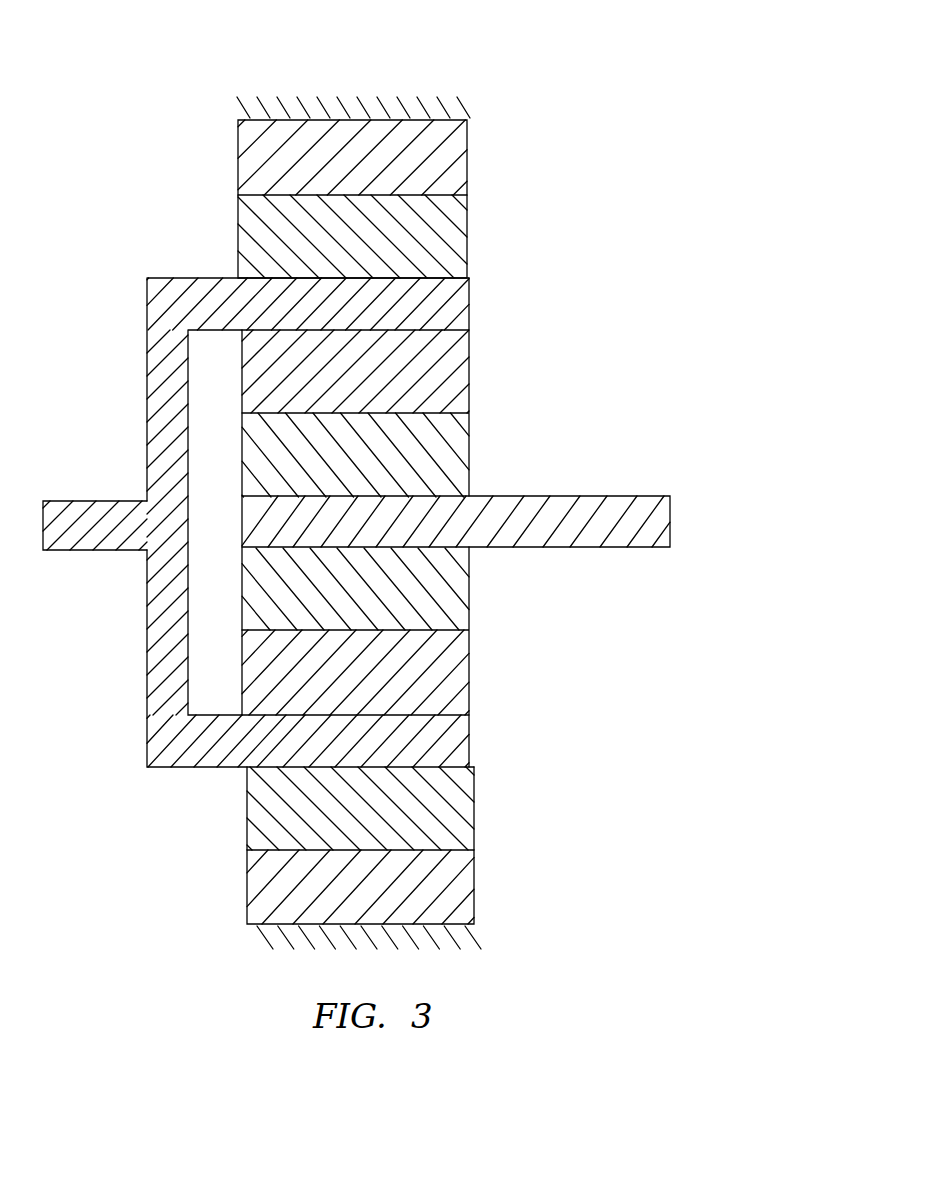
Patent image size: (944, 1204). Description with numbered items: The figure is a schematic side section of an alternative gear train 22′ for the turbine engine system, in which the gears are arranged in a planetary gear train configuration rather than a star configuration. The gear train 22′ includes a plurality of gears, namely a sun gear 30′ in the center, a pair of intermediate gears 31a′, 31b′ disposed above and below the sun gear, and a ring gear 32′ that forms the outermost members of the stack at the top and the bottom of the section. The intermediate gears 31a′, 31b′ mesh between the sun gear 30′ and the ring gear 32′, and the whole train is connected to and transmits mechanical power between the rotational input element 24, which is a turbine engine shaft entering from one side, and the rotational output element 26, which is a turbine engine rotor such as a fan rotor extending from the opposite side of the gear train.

The gear train 22′ is at (360, 494).
The ring gear 32′ is at (475, 883).
The star gear 31a′ is at (532, 244).
The sun gear 30′ is at (533, 437).
The rotational input element 24 is at (672, 512).
The rotational output element 26 is at (44, 527).
The star gear 31b′ is at (419, 740).